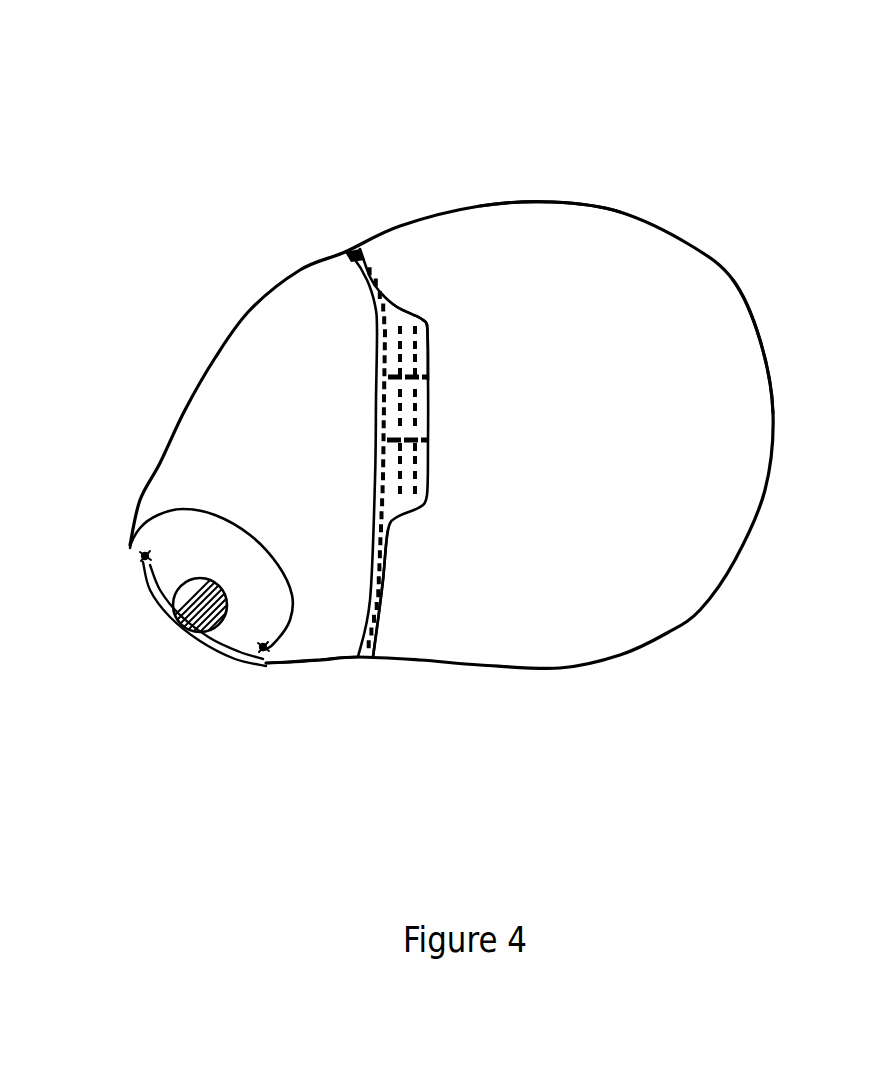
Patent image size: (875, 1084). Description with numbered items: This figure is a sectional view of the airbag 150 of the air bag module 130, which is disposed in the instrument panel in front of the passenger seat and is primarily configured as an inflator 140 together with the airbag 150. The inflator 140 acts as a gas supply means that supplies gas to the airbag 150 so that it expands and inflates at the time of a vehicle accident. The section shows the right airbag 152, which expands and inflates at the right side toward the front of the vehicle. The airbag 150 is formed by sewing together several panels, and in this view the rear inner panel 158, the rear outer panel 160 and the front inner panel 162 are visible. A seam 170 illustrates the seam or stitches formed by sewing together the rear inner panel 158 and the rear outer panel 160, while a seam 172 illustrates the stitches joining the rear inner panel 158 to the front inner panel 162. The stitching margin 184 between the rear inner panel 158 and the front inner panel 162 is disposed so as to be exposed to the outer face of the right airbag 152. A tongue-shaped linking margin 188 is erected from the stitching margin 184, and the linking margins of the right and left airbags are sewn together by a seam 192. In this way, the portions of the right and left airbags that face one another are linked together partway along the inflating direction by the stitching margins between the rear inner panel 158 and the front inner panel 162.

The air bag module 130 is at (300, 697).
The inflator 140 is at (182, 637).
The airbag 150 is at (670, 148).
The right airbag 152 is at (729, 282).
The rear inner panel 158 is at (180, 508).
The rear outer panel 160 is at (230, 663).
The front inner panel 162 is at (528, 228).
The seam 170 is at (140, 566).
The seam 172 is at (370, 292).
The stitching margin 184 is at (380, 623).
The linking margin 188 is at (402, 310).
The seam 192 is at (428, 418).